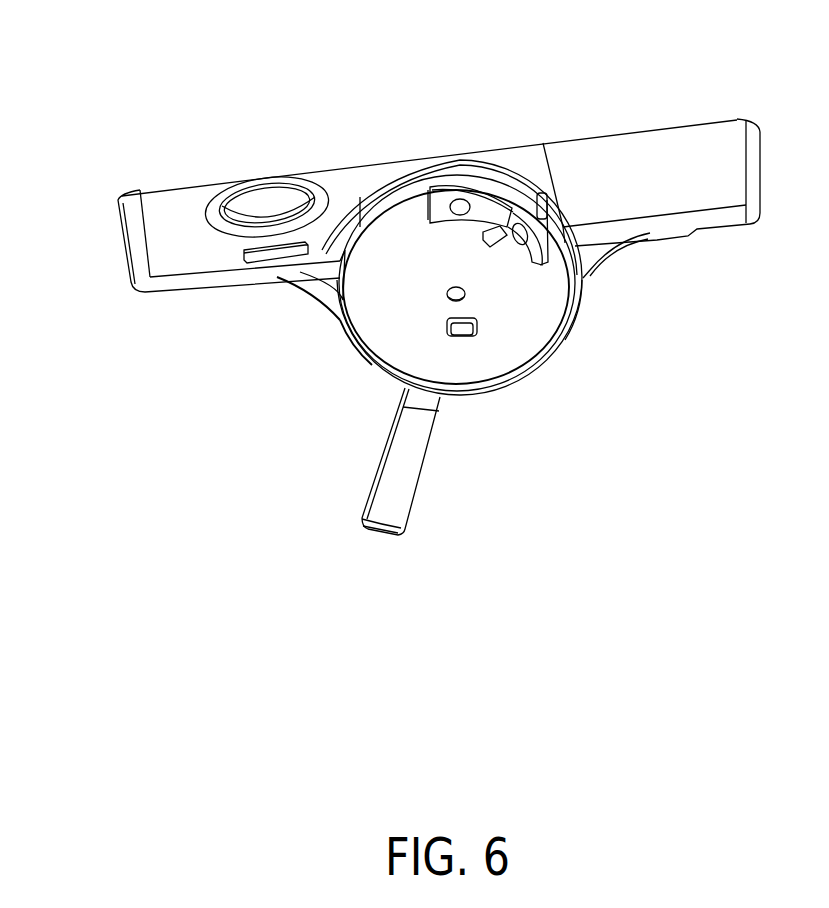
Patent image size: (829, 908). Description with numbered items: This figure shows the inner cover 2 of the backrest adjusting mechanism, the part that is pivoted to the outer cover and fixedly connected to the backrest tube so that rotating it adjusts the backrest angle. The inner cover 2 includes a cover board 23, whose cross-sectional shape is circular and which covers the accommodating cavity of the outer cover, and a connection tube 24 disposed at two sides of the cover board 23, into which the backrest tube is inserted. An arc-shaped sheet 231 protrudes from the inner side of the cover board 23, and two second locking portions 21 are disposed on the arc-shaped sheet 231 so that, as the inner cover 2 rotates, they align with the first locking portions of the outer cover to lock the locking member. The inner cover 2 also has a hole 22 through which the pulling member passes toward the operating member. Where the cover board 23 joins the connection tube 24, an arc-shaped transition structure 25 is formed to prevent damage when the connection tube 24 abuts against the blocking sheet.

The inner cover 2 is at (52, 61).
The second locking portion 21 is at (515, 208).
The hole 22 is at (546, 203).
The cover board 23 is at (405, 343).
The arc-shaped sheet 231 is at (577, 287).
The connection tube 24 is at (157, 210).
The arc-shaped transition structure 25 is at (318, 283).